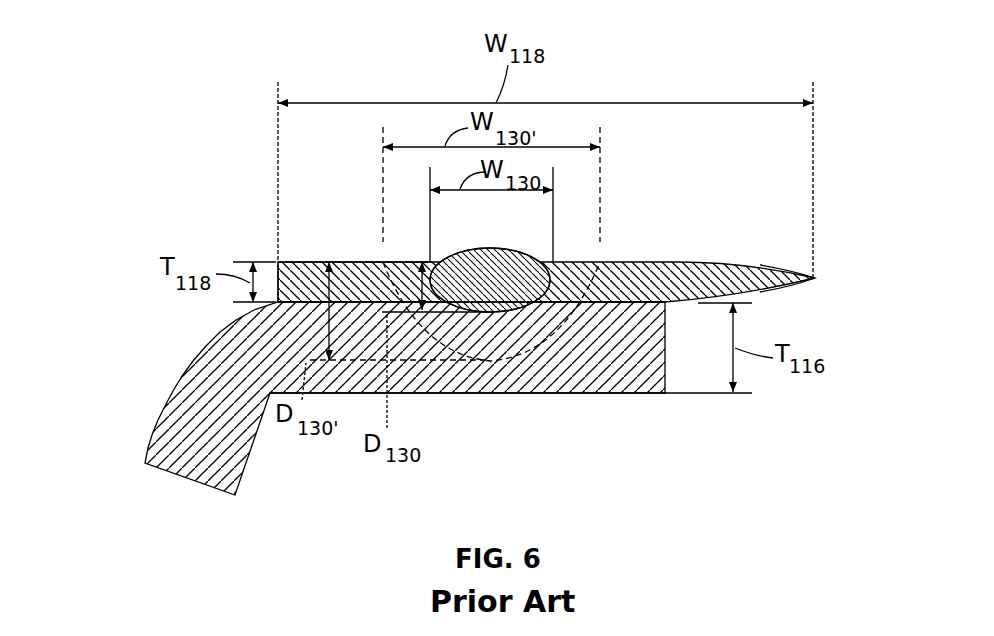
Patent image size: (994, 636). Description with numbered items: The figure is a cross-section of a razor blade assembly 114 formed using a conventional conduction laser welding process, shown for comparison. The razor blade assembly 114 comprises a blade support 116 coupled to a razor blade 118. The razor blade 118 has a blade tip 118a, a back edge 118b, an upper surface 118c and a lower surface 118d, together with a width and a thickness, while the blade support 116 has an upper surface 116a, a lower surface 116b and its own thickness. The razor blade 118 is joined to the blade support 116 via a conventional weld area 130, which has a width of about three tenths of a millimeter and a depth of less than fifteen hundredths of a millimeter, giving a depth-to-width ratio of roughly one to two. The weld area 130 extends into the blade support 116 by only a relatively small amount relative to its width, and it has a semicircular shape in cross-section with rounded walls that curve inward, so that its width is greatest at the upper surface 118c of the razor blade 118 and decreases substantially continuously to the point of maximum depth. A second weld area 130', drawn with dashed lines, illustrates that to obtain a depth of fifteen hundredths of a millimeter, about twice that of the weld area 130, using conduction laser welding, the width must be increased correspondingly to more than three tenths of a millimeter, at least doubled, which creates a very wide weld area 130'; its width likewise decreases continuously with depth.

The razor blade assembly 114 is at (458, 311).
The blade support 116 is at (150, 406).
The upper surface of blade support 116a is at (630, 298).
The lower surface of blade support 116b is at (628, 394).
The razor blade 118 is at (710, 253).
The blade tip 118a is at (815, 279).
The back edge 118b is at (308, 259).
The upper surface of razor blade 118c is at (367, 259).
The lower surface of razor blade 118d is at (587, 394).
The weld area 130 is at (492, 254).
The weld area 130' is at (542, 244).